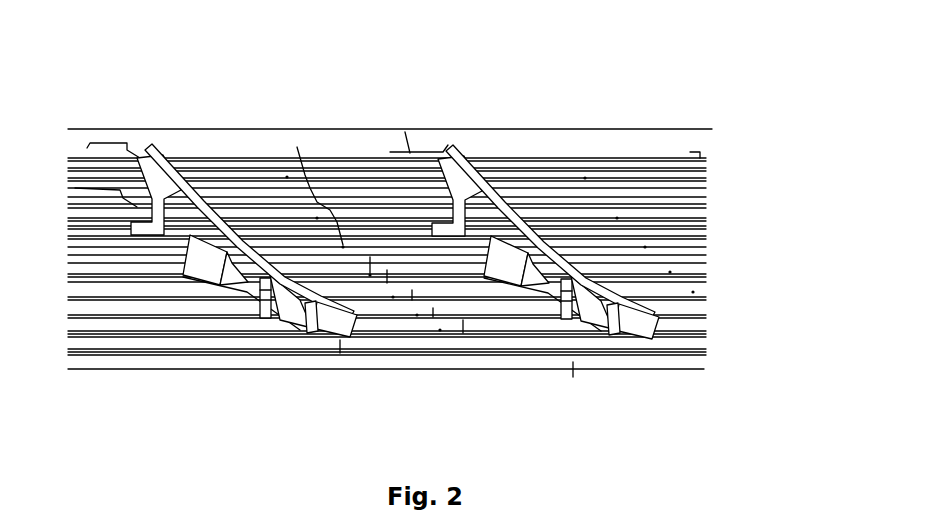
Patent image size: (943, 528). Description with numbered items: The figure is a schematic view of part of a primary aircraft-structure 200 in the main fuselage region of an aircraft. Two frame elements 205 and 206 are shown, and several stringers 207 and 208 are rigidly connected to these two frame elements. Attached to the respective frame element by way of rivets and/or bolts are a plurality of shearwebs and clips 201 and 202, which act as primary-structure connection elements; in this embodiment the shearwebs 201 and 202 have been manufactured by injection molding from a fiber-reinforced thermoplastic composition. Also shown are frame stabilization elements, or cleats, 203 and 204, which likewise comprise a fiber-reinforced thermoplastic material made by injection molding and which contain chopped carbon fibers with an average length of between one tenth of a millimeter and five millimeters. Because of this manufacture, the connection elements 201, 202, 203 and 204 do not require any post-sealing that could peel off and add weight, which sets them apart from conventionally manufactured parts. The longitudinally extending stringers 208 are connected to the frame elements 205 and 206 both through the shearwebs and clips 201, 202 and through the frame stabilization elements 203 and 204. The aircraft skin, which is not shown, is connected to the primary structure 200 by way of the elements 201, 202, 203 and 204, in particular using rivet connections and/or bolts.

The primary aircraft-structure 200 is at (683, 82).
The shearweb 201 is at (592, 293).
The shearweb 202 is at (190, 217).
The frame stabilization element 203 is at (600, 318).
The frame stabilization element 204 is at (305, 322).
The frame element 205 is at (605, 306).
The frame element 206 is at (362, 318).
The stringer 207 is at (385, 230).
The stringer 208 is at (585, 208).